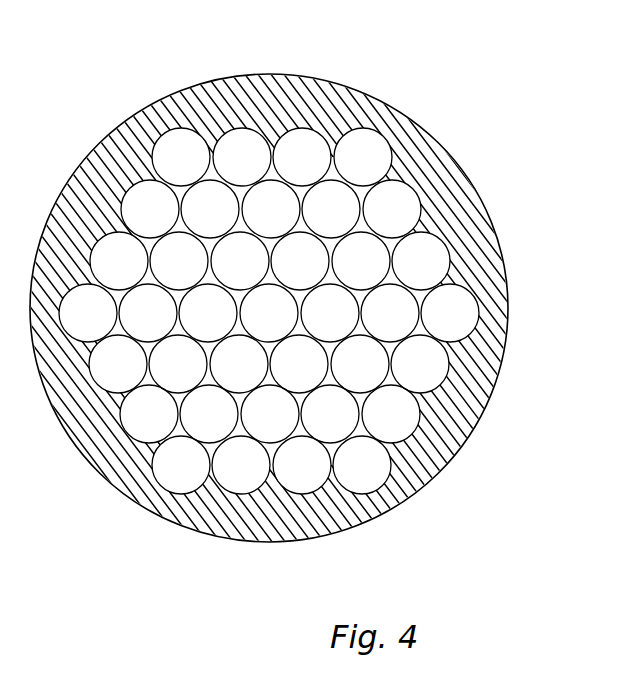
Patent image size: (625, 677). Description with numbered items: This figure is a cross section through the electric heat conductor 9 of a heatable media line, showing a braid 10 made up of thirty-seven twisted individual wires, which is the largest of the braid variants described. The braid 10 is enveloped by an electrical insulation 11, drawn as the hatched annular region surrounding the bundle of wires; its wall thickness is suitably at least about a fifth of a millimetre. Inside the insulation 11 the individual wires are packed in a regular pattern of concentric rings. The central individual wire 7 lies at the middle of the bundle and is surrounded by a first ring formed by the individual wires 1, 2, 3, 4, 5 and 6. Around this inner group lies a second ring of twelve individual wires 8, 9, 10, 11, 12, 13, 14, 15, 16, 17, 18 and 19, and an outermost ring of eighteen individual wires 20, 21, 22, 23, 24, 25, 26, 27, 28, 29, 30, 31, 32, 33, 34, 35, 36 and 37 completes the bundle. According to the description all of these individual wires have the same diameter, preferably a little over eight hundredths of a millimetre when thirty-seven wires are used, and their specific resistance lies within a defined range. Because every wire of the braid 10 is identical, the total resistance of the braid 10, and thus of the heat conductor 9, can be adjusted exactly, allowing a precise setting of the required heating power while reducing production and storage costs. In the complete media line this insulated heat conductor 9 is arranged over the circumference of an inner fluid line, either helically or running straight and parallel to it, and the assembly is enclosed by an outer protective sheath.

The electric heat conductor 9 is at (421, 60).
The braid 10 is at (510, 117).
The electrical insulation 11 is at (548, 204).
The individual wire 1 is at (300, 261).
The individual wire 2 is at (330, 313).
The individual wire 3 is at (299, 364).
The individual wire 4 is at (239, 364).
The individual wire 5 is at (208, 313).
The individual wire 6 is at (240, 261).
The individual wire 7 is at (269, 313).
The individual wire 8 is at (271, 209).
The individual wire 12 is at (360, 364).
The individual wire 13 is at (330, 414).
The individual wire 14 is at (270, 414).
The individual wire 15 is at (209, 414).
The individual wire 16 is at (178, 364).
The individual wire 17 is at (148, 313).
The individual wire 18 is at (179, 261).
The individual wire 19 is at (210, 209).
The individual wire 20 is at (242, 157).
The individual wire 21 is at (302, 157).
The individual wire 22 is at (363, 157).
The individual wire 23 is at (392, 209).
The individual wire 24 is at (421, 261).
The individual wire 25 is at (450, 313).
The individual wire 26 is at (420, 364).
The individual wire 27 is at (391, 414).
The individual wire 28 is at (362, 465).
The individual wire 29 is at (302, 465).
The individual wire 30 is at (241, 465).
The individual wire 31 is at (181, 465).
The individual wire 32 is at (149, 414).
The individual wire 33 is at (118, 364).
The individual wire 34 is at (88, 313).
The individual wire 35 is at (119, 261).
The individual wire 36 is at (150, 209).
The individual wire 37 is at (181, 157).